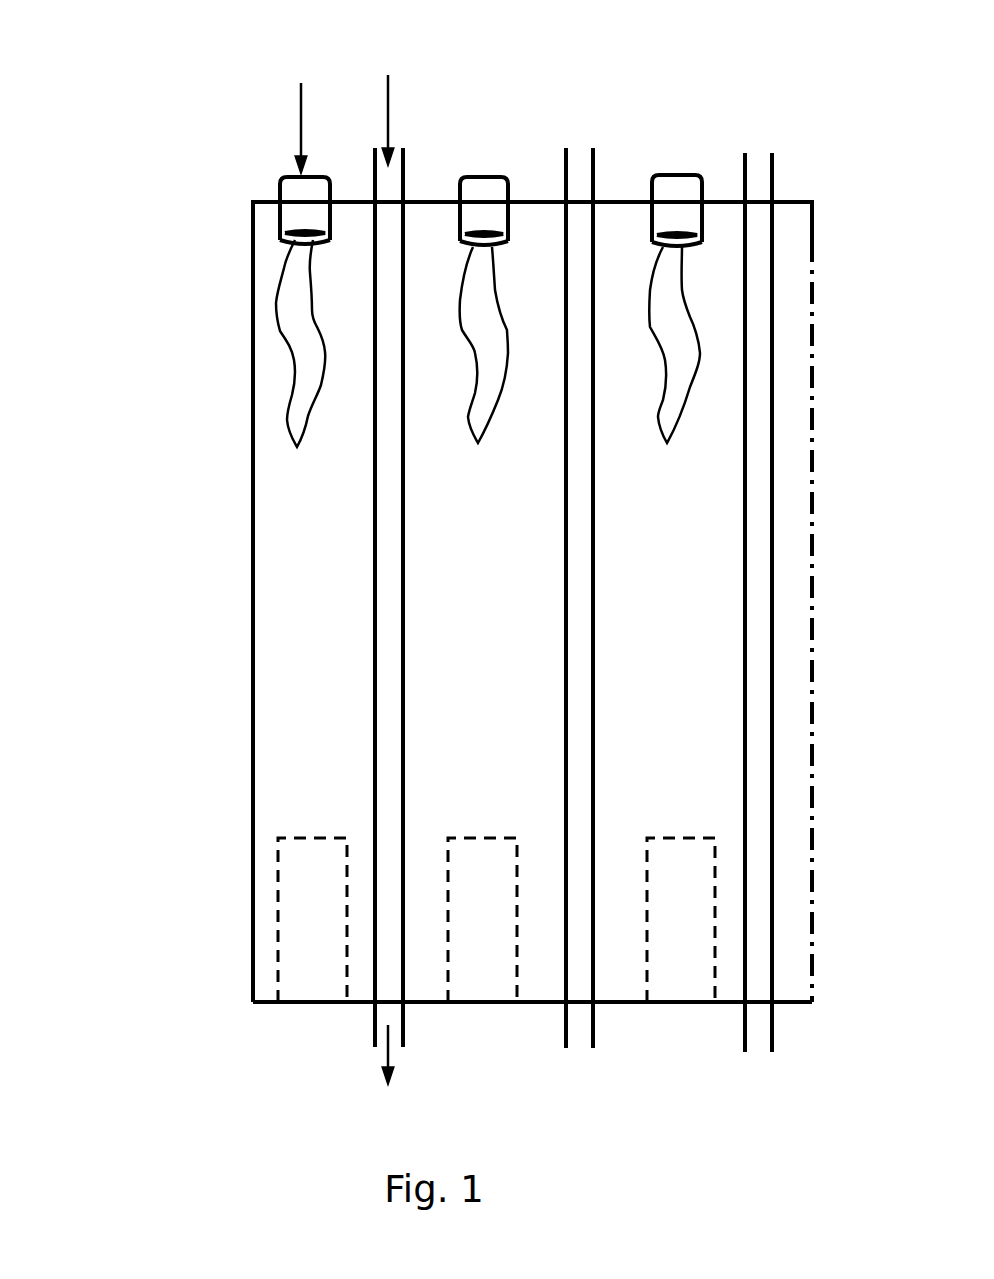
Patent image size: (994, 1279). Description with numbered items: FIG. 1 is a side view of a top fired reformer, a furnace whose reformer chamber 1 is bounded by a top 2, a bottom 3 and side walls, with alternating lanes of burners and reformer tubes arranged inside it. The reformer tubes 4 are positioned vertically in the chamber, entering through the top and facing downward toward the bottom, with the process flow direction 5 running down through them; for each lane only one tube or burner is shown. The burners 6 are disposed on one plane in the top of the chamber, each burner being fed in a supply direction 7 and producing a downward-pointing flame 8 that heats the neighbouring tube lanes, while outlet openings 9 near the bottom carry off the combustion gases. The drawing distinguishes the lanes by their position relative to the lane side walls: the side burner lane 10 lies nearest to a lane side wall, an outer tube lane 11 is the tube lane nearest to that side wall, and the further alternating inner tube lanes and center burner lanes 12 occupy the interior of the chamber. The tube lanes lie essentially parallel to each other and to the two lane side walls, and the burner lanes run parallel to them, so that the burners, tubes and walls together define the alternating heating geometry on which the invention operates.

The furnace 1 is at (250, 529).
The ceiling 2 is at (635, 201).
The floor 3 is at (357, 1003).
The tube 4 is at (405, 183).
The flow direction 5 is at (388, 563).
The burner 6 is at (280, 180).
The fuel supply direction 7 is at (296, 109).
The flame 8 is at (295, 368).
The outlet opening 9 is at (277, 907).
The combustion chamber 10 is at (315, 638).
The first zone 11 is at (488, 743).
The second zone 12 is at (705, 802).